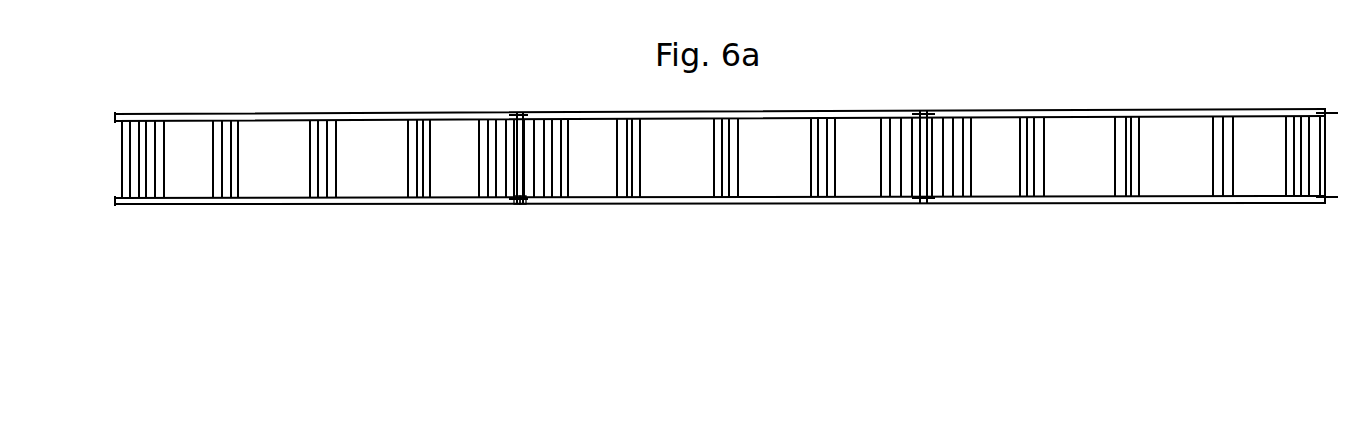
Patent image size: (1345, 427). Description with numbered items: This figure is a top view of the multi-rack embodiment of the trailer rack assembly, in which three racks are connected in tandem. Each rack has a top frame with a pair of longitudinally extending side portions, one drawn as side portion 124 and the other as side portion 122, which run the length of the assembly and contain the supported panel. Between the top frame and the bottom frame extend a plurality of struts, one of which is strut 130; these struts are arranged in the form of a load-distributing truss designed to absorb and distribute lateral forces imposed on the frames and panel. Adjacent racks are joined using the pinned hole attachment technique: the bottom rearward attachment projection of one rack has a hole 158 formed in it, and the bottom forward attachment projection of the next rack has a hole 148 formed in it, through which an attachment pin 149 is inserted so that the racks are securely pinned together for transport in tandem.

The side portion 122 is at (257, 207).
The side portion 124 is at (272, 114).
The strut 130 is at (222, 150).
The hole 148 is at (518, 205).
The attachment pin 149 is at (523, 204).
The hole 158 is at (512, 205).